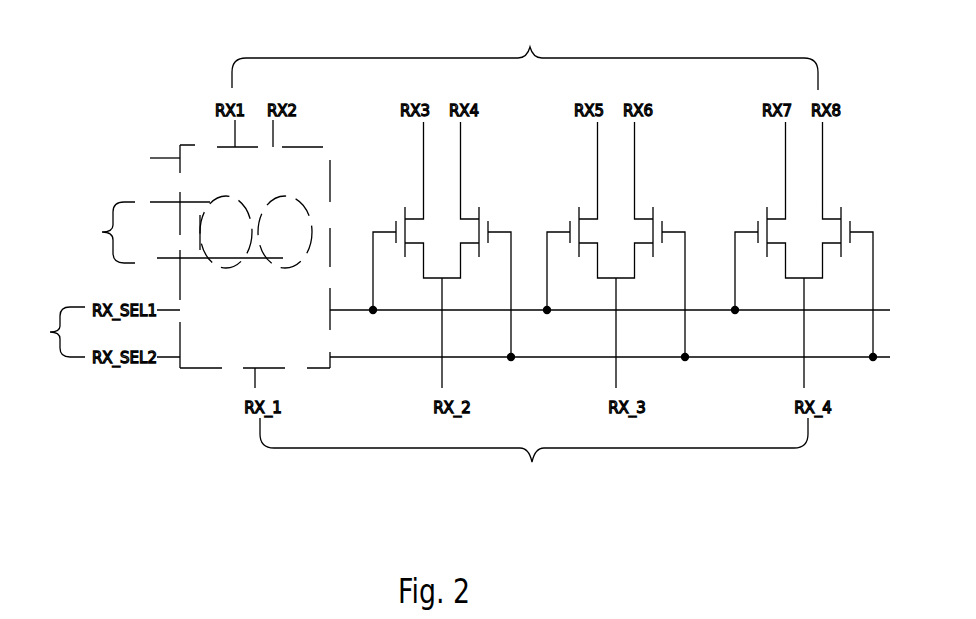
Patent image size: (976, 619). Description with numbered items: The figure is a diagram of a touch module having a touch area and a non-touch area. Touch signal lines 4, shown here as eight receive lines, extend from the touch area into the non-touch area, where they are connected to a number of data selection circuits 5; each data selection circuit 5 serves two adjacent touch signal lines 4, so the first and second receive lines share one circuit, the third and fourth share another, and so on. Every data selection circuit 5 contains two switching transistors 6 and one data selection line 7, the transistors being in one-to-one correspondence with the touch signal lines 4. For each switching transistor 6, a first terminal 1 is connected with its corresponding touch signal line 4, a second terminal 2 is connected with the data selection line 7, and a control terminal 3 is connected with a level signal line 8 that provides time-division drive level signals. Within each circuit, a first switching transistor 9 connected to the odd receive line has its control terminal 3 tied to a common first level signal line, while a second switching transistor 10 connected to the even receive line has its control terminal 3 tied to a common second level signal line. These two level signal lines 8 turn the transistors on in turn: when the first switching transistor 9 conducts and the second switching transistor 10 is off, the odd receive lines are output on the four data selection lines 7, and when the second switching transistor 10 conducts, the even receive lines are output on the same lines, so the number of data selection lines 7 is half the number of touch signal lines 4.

The first terminal 1 is at (226, 222).
The second terminal 2 is at (268, 244).
The control terminal 3 is at (192, 232).
The touch signal lines 4 is at (525, 57).
The data selection circuit 5 is at (157, 158).
The switching transistor 6 is at (111, 232).
The data selection line 7 is at (534, 454).
The level signal line 8 is at (57, 332).
The first switching transistor 9 is at (174, 202).
The second switching transistor 10 is at (210, 264).